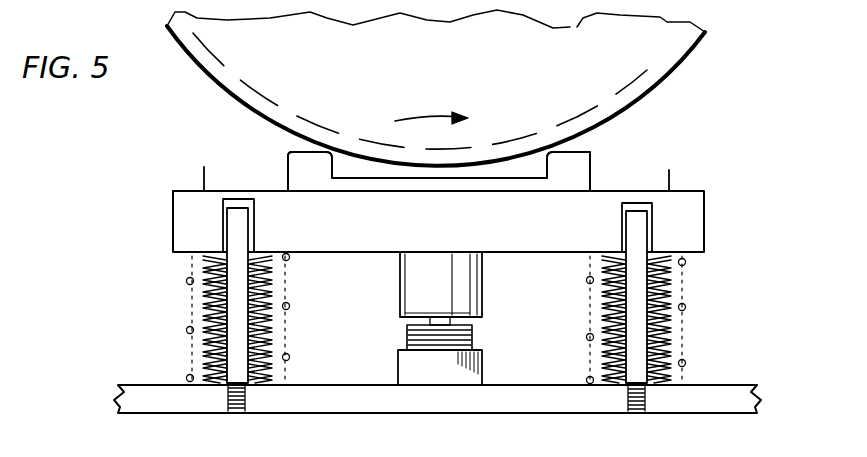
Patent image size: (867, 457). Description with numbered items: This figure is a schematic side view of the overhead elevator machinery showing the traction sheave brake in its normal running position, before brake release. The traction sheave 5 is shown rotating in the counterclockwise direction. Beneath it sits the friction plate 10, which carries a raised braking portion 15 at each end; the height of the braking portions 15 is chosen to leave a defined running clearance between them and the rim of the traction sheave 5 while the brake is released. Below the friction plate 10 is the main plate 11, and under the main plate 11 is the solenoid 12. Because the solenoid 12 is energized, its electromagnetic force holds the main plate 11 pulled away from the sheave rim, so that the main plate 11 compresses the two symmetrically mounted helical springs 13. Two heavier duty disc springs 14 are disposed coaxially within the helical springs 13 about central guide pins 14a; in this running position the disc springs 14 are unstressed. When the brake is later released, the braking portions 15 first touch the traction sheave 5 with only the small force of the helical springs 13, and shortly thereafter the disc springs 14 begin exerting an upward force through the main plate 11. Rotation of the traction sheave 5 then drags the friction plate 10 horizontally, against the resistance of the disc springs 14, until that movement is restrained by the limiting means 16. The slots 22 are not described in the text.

The traction sheave 5 is at (673, 70).
The friction plate 10 is at (590, 182).
The main plate 11 is at (704, 231).
The solenoid 12 is at (482, 281).
The helical springs 13 is at (190, 283).
The disc springs 14 is at (271, 323).
The central guide pins 14a is at (237, 337).
The braking portions 15 is at (300, 153).
The limiting means 16 is at (203, 181).
The bores / slots with bolts 22 is at (223, 200).